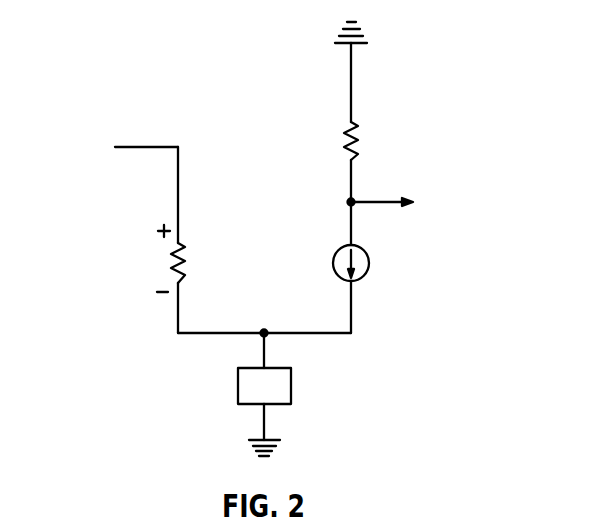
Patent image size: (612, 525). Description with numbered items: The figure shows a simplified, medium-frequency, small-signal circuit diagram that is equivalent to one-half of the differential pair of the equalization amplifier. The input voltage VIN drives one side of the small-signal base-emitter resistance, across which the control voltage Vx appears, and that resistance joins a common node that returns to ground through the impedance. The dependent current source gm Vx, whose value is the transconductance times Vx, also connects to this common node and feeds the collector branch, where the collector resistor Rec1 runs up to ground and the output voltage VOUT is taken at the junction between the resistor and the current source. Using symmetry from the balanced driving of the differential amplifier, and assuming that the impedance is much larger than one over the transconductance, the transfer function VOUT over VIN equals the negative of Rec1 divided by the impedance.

The collector resistor Rec1 is at (378, 141).
The output voltage VOUT is at (408, 205).
The dependent current source gm Vx is at (383, 263).
The input voltage VIN is at (127, 144).
The control voltage Vx is at (153, 258).